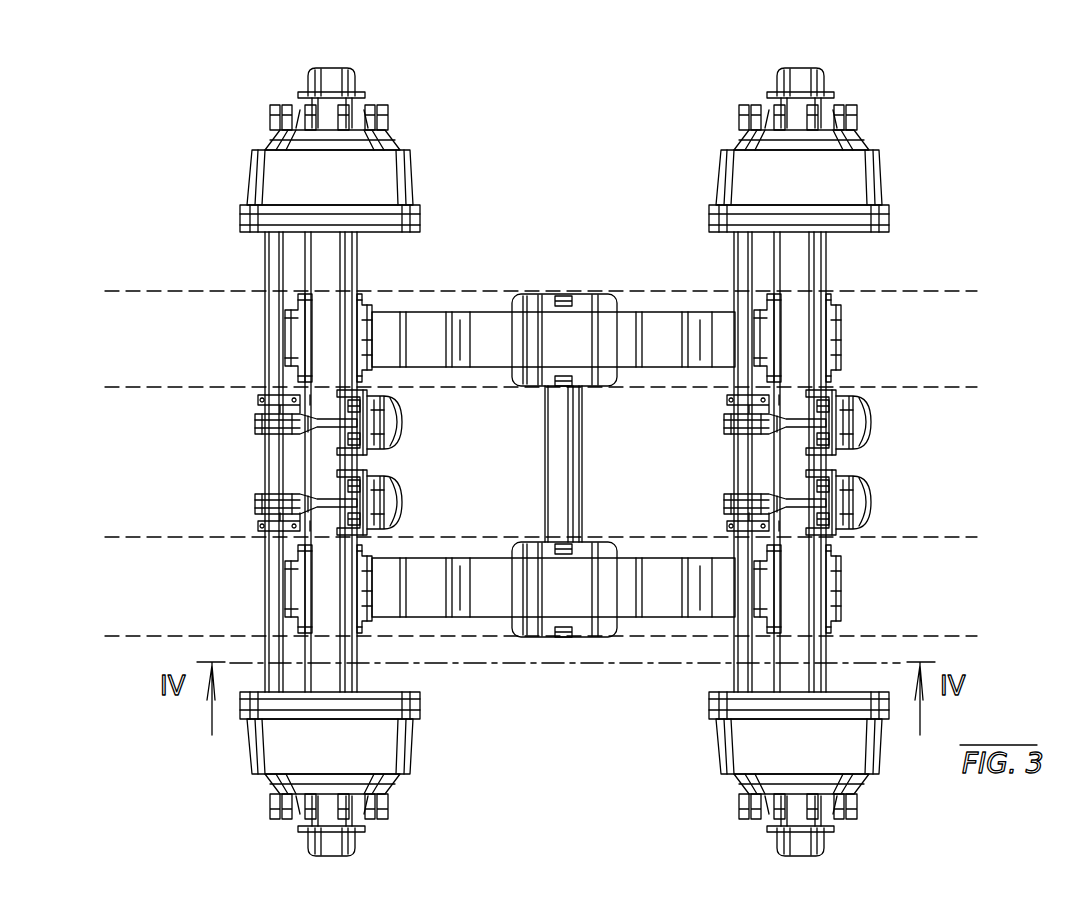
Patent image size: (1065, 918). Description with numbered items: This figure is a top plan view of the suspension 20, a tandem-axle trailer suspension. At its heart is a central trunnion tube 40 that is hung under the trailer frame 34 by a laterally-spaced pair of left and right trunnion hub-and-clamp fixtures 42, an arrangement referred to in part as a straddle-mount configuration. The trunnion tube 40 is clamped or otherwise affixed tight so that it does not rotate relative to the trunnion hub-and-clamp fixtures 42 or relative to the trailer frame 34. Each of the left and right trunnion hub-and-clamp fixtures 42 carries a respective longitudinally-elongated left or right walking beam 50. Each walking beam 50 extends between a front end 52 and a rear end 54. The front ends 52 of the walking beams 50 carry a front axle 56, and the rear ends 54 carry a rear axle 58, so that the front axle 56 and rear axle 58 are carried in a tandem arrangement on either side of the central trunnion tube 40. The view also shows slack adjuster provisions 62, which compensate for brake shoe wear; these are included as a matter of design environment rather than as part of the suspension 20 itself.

The suspension 20 is at (1007, 172).
The trailer frame 34 is at (930, 388).
The central trunnion tube 40 is at (545, 462).
The trunnion hub-and-clamp fixture 42 is at (620, 388).
The walking beam 50 is at (640, 312).
The front end 52 is at (372, 312).
The rear end 54 is at (762, 315).
The front axle 56 is at (355, 262).
The rear axle 58 is at (826, 262).
The slack adjuster provisions 62 is at (268, 252).